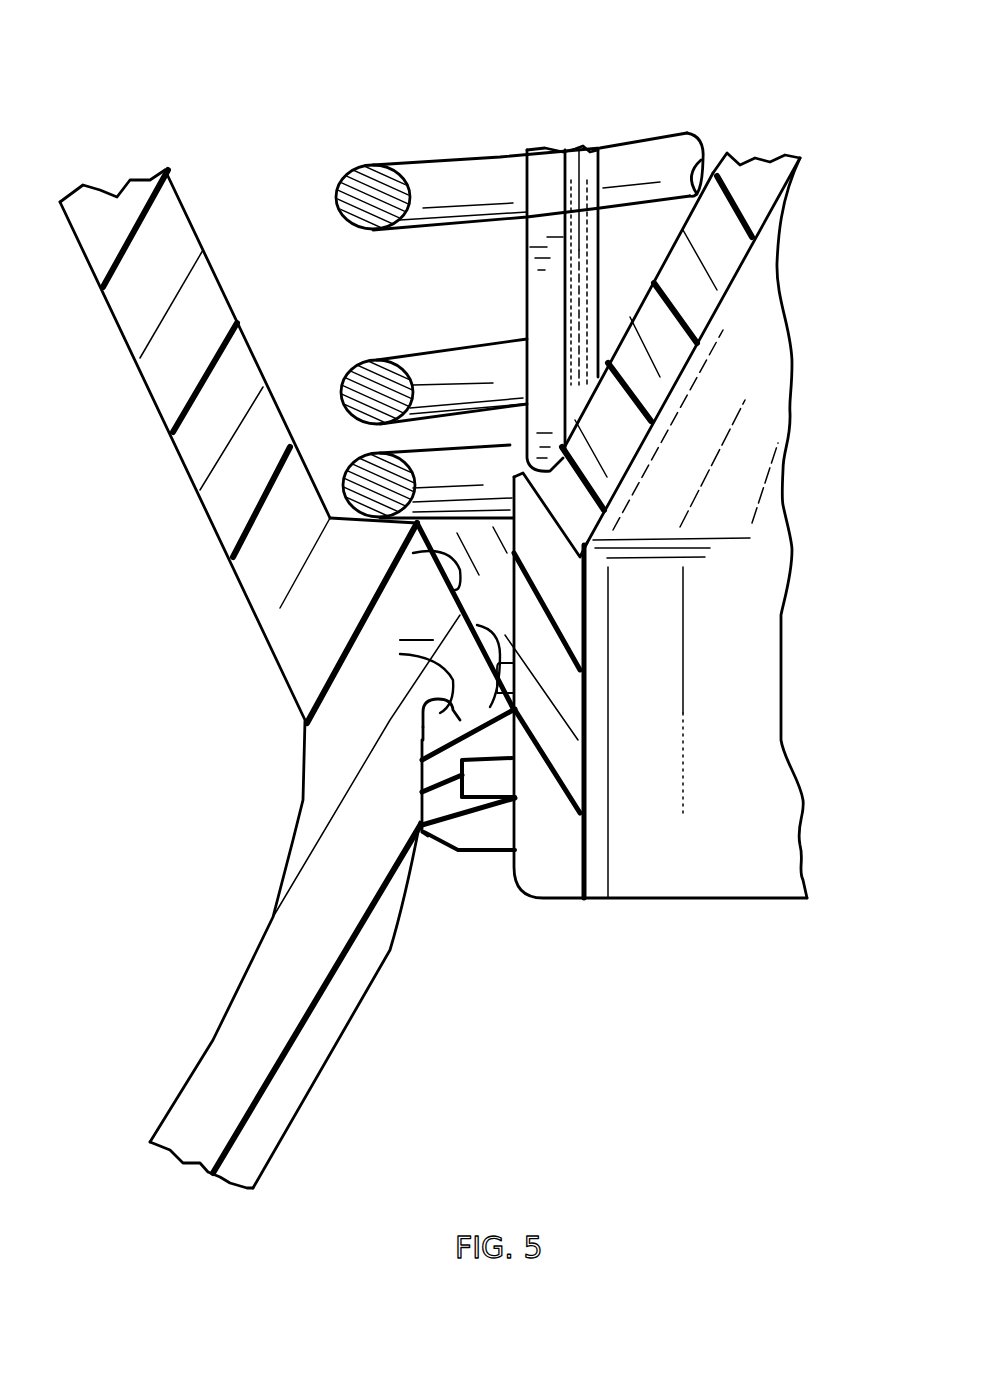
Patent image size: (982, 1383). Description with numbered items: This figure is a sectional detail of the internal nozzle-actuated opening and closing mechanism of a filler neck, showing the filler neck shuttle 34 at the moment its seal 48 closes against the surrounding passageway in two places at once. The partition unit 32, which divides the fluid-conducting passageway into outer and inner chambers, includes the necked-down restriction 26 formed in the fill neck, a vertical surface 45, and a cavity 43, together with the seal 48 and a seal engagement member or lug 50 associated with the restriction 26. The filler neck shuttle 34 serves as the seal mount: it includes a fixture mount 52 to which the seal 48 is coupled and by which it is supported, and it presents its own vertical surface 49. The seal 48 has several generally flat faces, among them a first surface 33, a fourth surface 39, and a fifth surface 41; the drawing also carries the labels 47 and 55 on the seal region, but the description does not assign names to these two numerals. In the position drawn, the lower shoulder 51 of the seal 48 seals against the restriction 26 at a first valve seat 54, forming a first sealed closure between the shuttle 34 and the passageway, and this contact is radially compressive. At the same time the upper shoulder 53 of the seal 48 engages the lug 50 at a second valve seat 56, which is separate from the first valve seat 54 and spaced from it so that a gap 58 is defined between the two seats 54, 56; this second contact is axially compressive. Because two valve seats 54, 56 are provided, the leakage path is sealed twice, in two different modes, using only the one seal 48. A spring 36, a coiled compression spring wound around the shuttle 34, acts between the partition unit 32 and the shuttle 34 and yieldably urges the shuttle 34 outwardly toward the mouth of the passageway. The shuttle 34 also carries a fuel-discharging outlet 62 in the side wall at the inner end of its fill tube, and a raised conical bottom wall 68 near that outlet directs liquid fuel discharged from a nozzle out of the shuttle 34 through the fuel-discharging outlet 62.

The necked-down restriction 26 is at (317, 803).
The partition unit 32 is at (330, 744).
The first surface 33 is at (510, 677).
The filler neck shuttle 34 is at (490, 50).
The spring 36 is at (415, 172).
The fourth surface 39 is at (443, 847).
The fifth surface 41 is at (468, 848).
The cavity 43 is at (400, 640).
The vertical surface 45 is at (477, 625).
The hook portion 47 is at (413, 553).
The seal 48 is at (478, 857).
The vertical surface 49 is at (303, 776).
The seal engagement member or lug 50 is at (400, 654).
The lower shoulder 51 is at (429, 808).
The fixture mount 52 is at (483, 780).
The upper shoulder 53 is at (297, 840).
The first valve seat 54 is at (293, 853).
The lip 55 is at (303, 775).
The second valve seat 56 is at (427, 697).
The gap 58 is at (425, 727).
The fuel-discharging outlet 62 is at (620, 268).
The raised conical bottom wall 68 is at (760, 195).